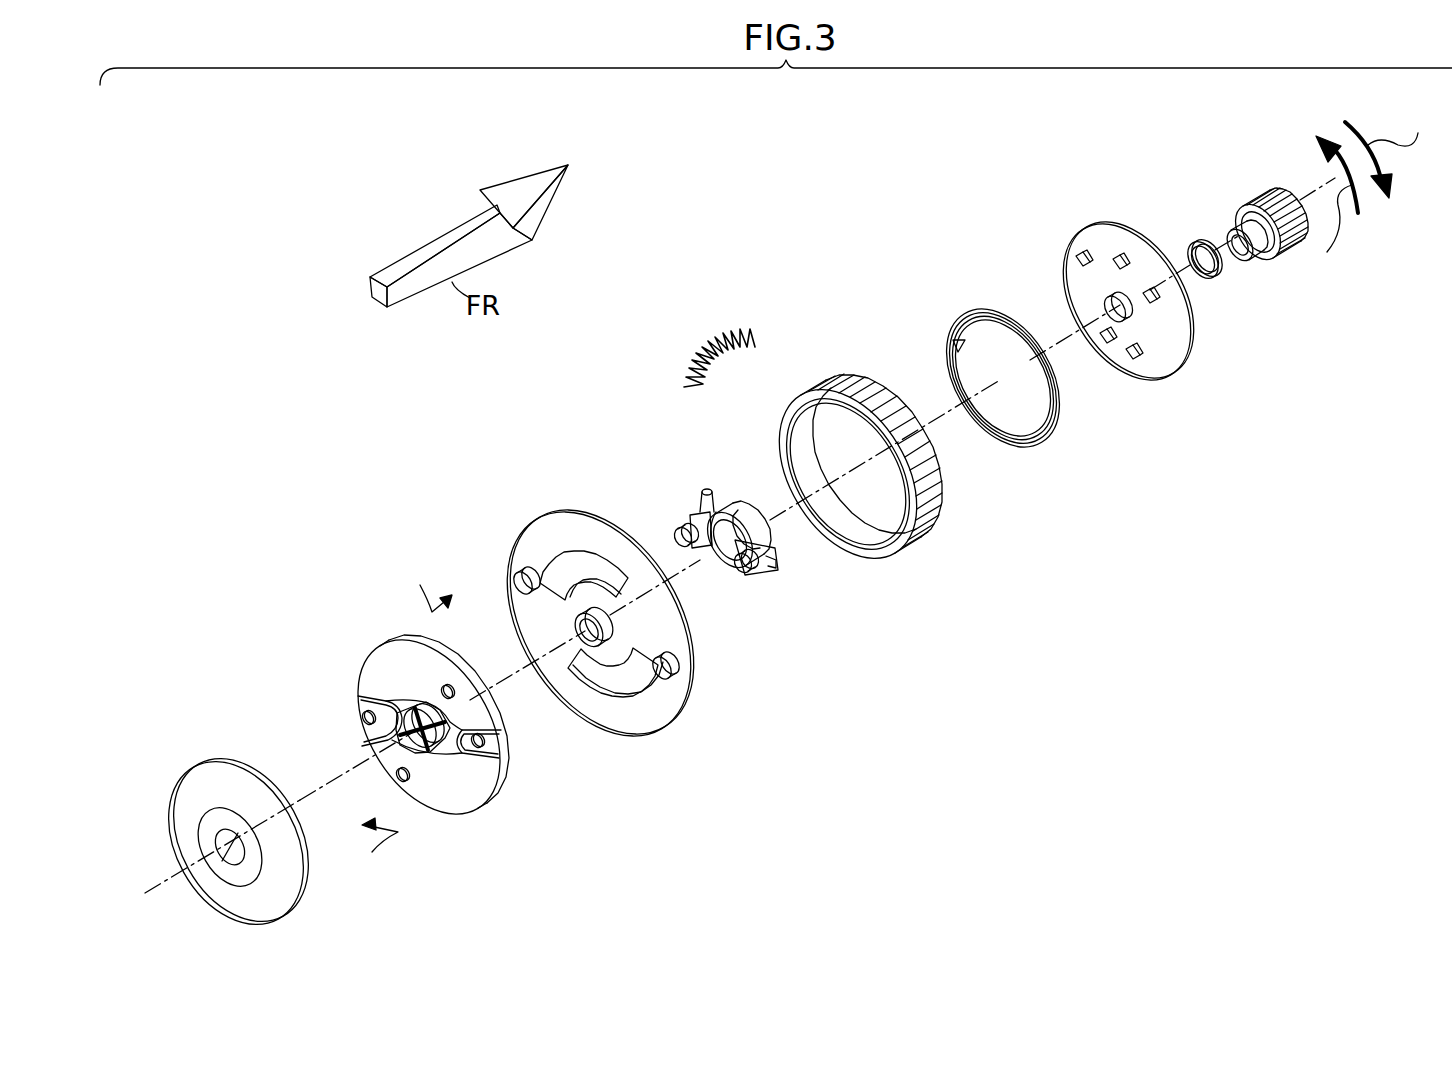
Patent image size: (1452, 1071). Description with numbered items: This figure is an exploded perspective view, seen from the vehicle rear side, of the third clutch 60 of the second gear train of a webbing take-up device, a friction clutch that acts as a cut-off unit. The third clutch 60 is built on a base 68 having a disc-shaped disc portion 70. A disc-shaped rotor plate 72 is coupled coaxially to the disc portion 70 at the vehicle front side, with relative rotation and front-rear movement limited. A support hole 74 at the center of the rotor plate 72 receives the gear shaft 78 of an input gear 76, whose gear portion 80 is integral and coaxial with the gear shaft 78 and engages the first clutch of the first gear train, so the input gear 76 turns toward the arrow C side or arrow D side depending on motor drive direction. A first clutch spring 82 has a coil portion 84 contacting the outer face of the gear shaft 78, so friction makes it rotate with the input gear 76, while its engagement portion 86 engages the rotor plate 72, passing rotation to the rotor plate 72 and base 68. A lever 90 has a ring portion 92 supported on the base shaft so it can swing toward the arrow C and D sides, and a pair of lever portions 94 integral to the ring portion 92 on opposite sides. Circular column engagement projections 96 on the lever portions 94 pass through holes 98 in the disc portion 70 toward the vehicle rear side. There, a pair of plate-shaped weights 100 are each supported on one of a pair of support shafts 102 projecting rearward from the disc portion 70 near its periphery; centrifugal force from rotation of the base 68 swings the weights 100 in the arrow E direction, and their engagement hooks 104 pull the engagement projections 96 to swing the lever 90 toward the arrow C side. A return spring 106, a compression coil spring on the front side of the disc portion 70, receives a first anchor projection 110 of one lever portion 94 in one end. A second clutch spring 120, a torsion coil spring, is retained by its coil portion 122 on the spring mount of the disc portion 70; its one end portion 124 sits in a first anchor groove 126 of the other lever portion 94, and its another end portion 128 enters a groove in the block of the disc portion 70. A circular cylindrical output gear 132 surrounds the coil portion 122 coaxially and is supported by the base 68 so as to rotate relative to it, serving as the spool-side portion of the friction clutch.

The third clutch 60 is at (757, 250).
The base 68 is at (596, 597).
The disc portion 70 is at (570, 535).
The rotor plate 72 is at (1145, 283).
The support hole 74 is at (1125, 316).
The input gear 76 is at (1278, 205).
The gear shaft 78 is at (1248, 258).
The gear portion 80 is at (1282, 205).
The first clutch spring 82 is at (1213, 260).
The coil portion 84 is at (1200, 240).
The engagement portion 86 is at (1187, 255).
The lever 90 is at (742, 518).
The ring portion 92 is at (745, 520).
The lever portions 94 is at (712, 512).
The engagement projections 96 is at (684, 532).
The holes 98 is at (562, 598).
The weights 100 is at (394, 735).
The support shafts 102 is at (523, 578).
The engagement hooks 104 is at (395, 735).
The return spring 106 is at (688, 362).
The first anchor projection 110 is at (705, 500).
The second clutch spring 120 is at (980, 342).
The coil portion 122 is at (1025, 325).
The one end portion 124 is at (1008, 428).
The first anchor groove 126 is at (785, 565).
The another end portion 128 is at (953, 346).
The output gear 132 is at (925, 525).